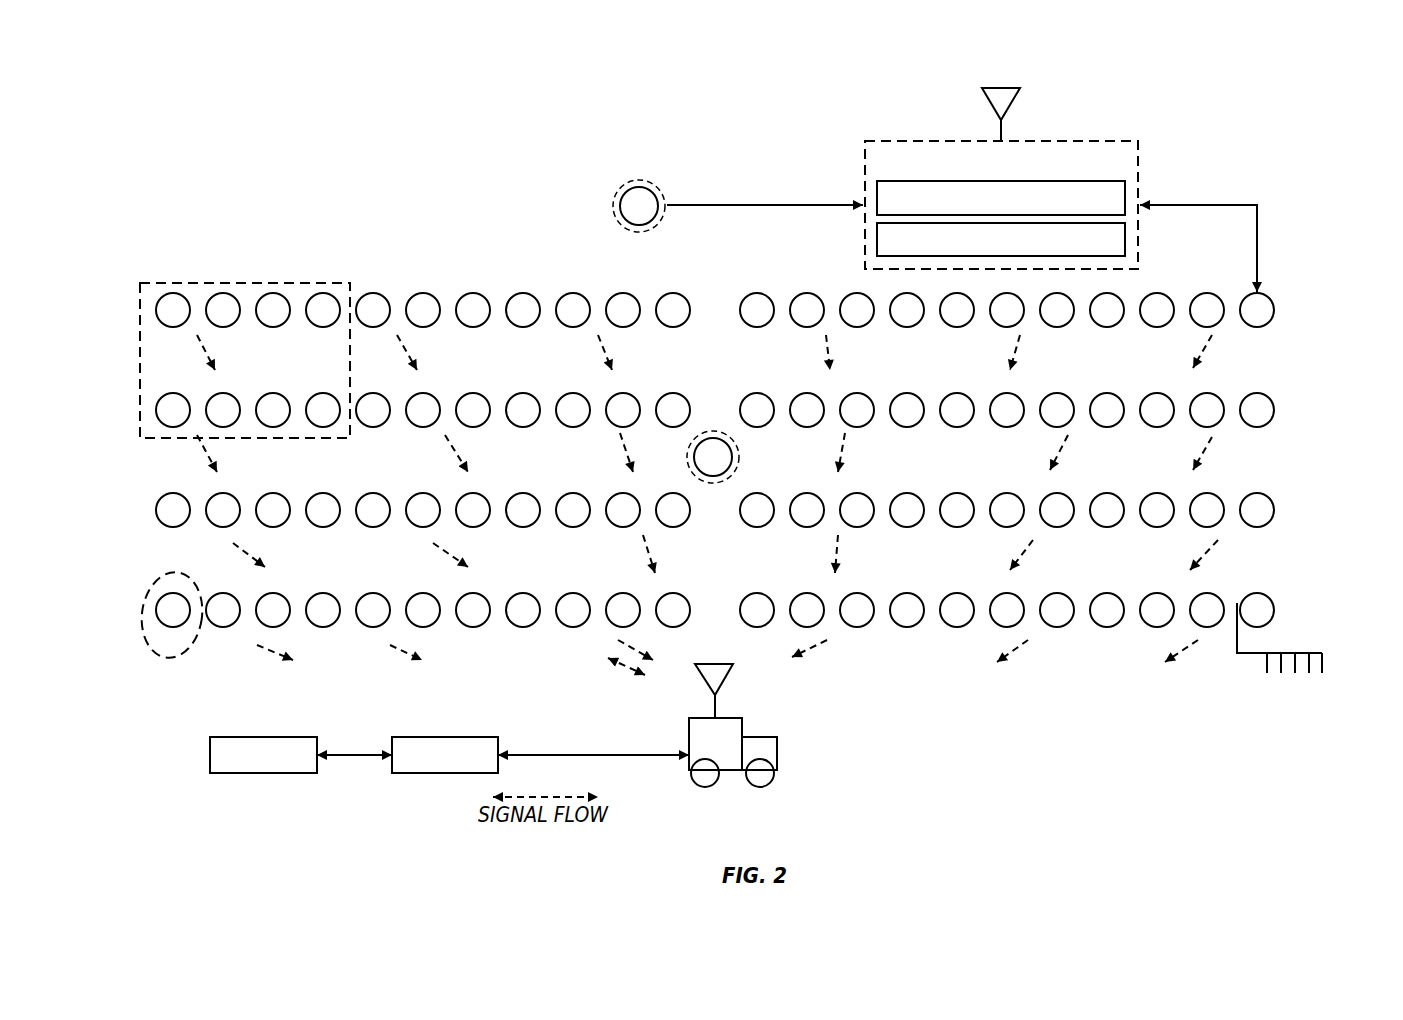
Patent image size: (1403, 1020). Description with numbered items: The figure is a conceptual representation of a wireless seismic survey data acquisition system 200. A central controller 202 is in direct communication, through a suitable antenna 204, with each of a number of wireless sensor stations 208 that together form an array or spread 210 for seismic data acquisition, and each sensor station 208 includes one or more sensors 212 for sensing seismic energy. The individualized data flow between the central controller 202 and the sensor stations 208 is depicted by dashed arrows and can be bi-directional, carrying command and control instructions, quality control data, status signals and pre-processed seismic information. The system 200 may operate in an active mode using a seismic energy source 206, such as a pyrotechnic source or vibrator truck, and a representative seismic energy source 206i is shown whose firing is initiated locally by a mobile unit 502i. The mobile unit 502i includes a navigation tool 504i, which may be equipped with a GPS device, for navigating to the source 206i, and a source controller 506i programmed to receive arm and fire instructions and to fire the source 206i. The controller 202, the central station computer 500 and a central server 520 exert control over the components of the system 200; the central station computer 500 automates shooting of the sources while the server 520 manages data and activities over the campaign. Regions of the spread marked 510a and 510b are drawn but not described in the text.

The seismic survey data acquisition system 200 is at (982, 678).
The central controller 202 is at (777, 750).
The antenna 204 is at (1013, 104).
The seismic energy source 206 is at (737, 453).
The representative seismic energy source 206i is at (644, 182).
The wireless sensor stations 208 is at (1257, 328).
The array 210 is at (342, 228).
The sensors 212 is at (1322, 673).
The central station computer 500 is at (421, 737).
The mobile unit 502i is at (1139, 163).
The navigation tool 504i is at (877, 188).
The source controller 506i is at (877, 238).
The source point group 510a is at (198, 283).
The source point 510b is at (172, 572).
The central server 520 is at (233, 737).